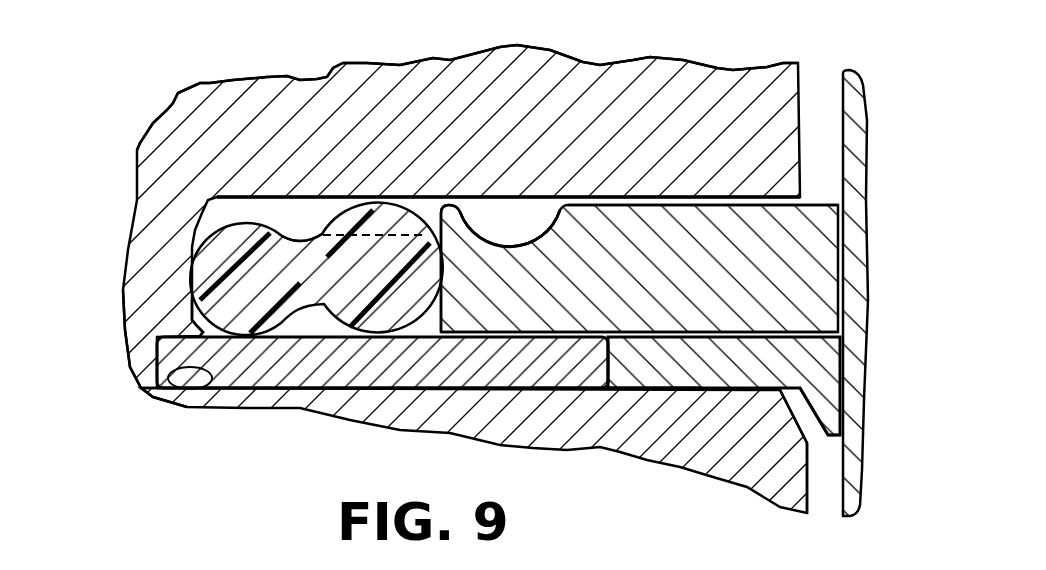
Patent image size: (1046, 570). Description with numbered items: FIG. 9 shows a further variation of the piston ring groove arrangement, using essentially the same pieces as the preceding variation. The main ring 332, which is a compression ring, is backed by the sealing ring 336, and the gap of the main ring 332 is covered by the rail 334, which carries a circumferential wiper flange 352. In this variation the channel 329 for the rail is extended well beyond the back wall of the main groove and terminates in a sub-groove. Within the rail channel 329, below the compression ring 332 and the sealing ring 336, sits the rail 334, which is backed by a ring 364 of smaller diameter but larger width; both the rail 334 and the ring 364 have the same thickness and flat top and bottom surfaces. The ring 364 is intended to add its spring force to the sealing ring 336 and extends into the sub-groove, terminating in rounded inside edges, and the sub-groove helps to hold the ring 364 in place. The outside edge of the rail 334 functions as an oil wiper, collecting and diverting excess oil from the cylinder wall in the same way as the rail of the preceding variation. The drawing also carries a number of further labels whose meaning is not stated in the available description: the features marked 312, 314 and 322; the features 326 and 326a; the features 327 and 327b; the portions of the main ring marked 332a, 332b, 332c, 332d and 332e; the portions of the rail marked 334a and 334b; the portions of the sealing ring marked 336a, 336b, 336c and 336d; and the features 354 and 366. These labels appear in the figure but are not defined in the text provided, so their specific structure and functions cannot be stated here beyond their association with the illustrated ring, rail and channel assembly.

The housing body 312 is at (735, 121).
The cover plate 314 is at (841, 98).
The housing wall surface 322 is at (604, 80).
The recess 326 is at (479, 212).
The recess surface 326a is at (523, 208).
The retaining lip 327 is at (187, 323).
The lip outer surface 327b is at (152, 386).
The rail channel 329 is at (545, 383).
The main ring 332 is at (690, 280).
The retainer ring top surface 332a is at (688, 204).
The retainer ring bottom surface 332b is at (581, 332).
The retainer ring inner face 332c is at (445, 255).
The retainer ring rounded corner 332d is at (450, 206).
The retainer ring recess surface 332e is at (530, 230).
The rail 334 is at (743, 372).
The support ring lower surface 334a is at (690, 390).
The support ring tapered portion 334b is at (757, 326).
The sealing ring 336 is at (327, 283).
The seal lower lobe surface 336a is at (383, 305).
The seal upper lobe surface 336b is at (238, 300).
The seal waist 336c is at (302, 242).
The seal contact plane 336d is at (384, 232).
The circumferential wiper flange 352 is at (826, 440).
The lower housing flange 354 is at (797, 418).
The ring 364 is at (490, 373).
The backing ring groove 366 is at (210, 392).